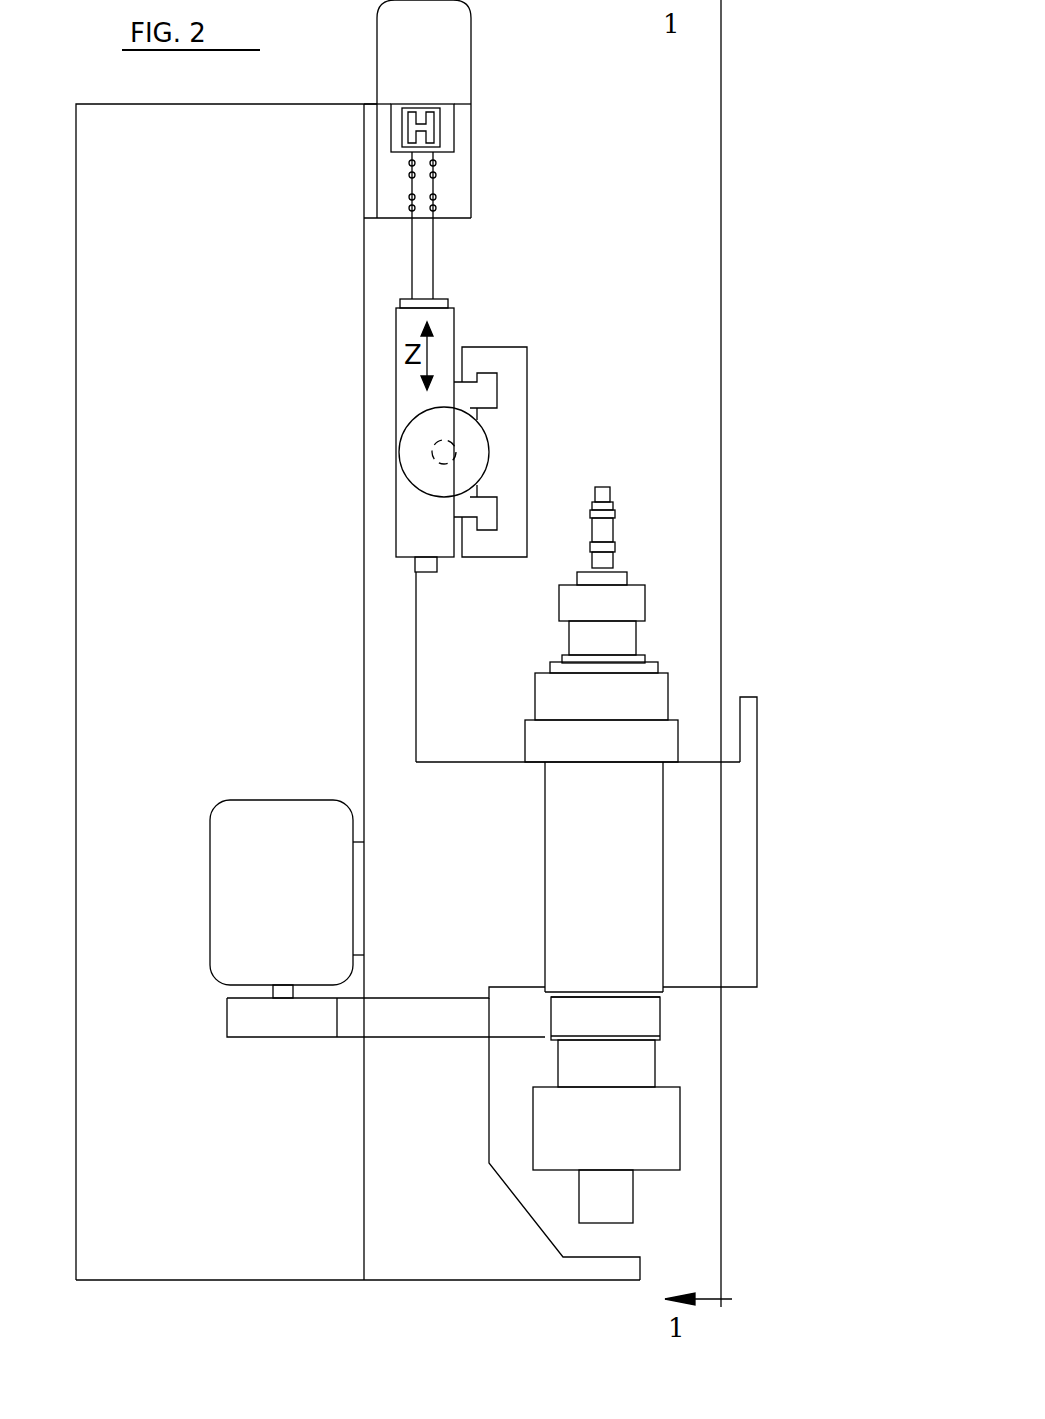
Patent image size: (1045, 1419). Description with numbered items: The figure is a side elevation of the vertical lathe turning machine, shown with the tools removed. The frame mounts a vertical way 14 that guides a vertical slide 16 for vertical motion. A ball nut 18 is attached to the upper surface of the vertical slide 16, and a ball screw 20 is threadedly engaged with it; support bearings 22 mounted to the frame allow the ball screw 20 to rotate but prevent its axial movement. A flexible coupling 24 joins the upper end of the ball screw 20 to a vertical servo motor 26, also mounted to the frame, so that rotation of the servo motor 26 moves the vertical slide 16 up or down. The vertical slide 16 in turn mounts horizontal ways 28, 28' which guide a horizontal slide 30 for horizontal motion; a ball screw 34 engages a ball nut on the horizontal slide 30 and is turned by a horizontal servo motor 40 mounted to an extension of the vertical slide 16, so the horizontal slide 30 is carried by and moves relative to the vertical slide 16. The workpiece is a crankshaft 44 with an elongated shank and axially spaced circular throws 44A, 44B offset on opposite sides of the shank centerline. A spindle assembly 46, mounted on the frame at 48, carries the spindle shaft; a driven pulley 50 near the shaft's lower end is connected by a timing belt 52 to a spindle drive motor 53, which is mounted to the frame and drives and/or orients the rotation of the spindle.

The vertical way 14 is at (418, 572).
The vertical slide 16 is at (451, 323).
The ball nut 18 is at (455, 298).
The ball screw 20 is at (433, 257).
The support bearings 22 is at (445, 185).
The flexible coupling 24 is at (440, 125).
The vertical servo motor 26 is at (455, 47).
The horizontal way 28 is at (548, 380).
The horizontal way 28' is at (537, 489).
The horizontal slide 30 is at (527, 347).
The ball screw 34 is at (455, 455).
The horizontal servo motor 40 is at (488, 435).
The crankshaft 44 is at (610, 488).
The circular throw 44A is at (615, 513).
The circular throw 44B is at (615, 548).
The spindle assembly 46 is at (693, 669).
The spindle assembly mounting 48 is at (672, 763).
The driven pulley 50 is at (660, 1018).
The timing belt 52 is at (428, 1005).
The spindle drive motor 53 is at (215, 875).